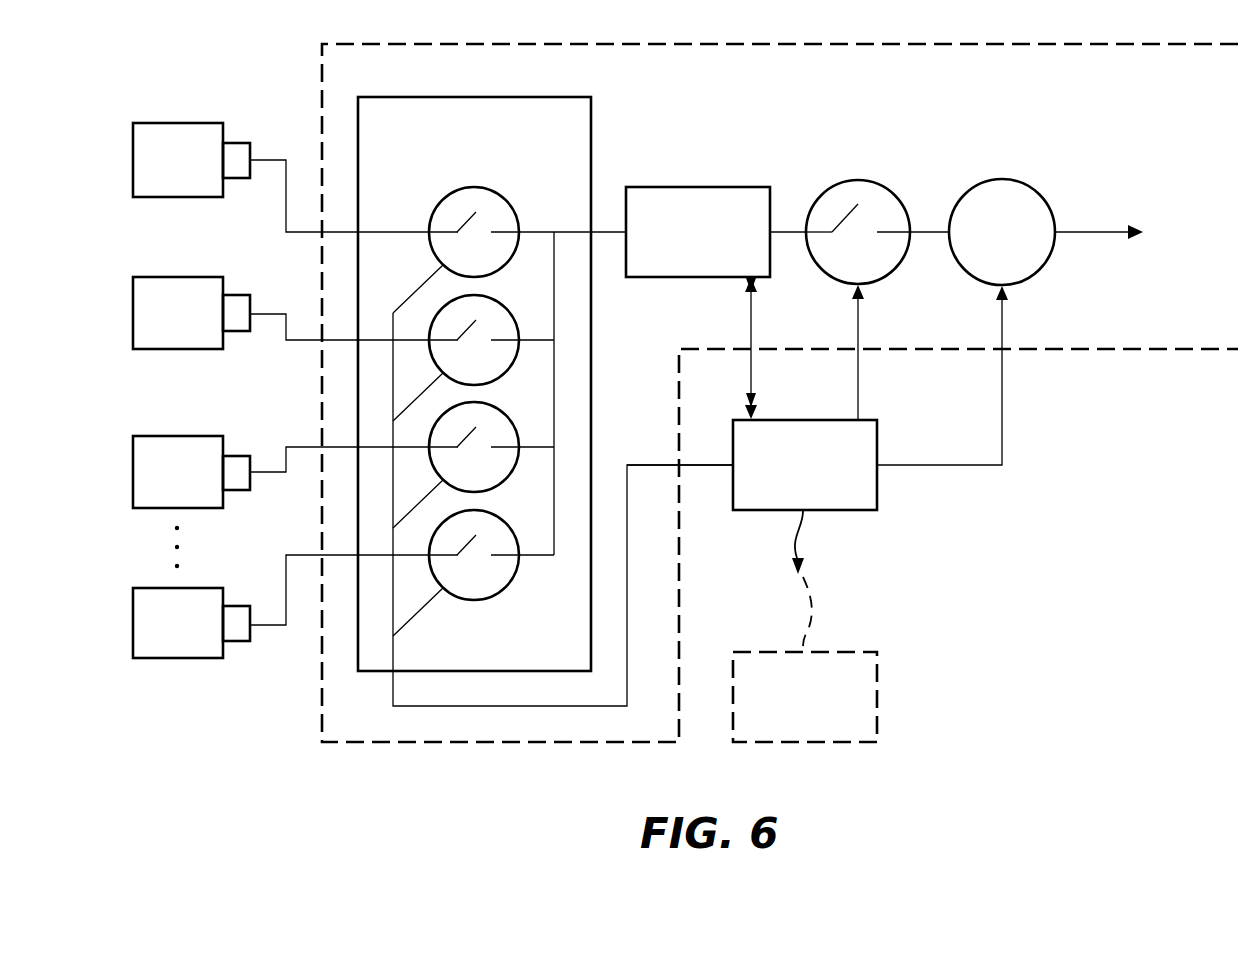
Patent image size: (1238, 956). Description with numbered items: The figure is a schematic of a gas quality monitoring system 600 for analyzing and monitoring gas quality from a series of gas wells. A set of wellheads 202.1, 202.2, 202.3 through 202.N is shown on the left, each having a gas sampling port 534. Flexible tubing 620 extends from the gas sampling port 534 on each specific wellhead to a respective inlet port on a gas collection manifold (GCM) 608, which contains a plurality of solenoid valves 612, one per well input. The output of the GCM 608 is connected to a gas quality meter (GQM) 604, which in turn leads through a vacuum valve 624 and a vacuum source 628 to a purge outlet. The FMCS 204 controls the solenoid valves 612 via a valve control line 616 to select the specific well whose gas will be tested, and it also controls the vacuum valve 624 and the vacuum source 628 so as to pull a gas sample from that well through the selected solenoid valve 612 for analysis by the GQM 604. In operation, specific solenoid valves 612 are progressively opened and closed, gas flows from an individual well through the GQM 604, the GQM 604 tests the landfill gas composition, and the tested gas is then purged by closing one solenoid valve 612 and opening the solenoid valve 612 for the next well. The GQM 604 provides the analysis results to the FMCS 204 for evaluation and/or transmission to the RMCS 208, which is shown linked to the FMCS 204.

The gas quality monitoring system 600 is at (780, 393).
The wellhead 202.1 is at (178, 160).
The wellhead 202.2 is at (178, 313).
The wellhead 202.3 is at (178, 472).
The wellhead 202.N is at (178, 623).
The gas sampling port 534 is at (237, 142).
The flexible tubing 620 is at (273, 158).
The gas collection manifold 608 is at (474, 384).
The solenoid valve 612 is at (563, 446).
The gas quality meter 604 is at (716, 303).
The vacuum valve 624 is at (877, 300).
The vacuum source 628 is at (1046, 322).
The FMCS 204 is at (805, 465).
The valve control line 616 is at (702, 466).
The RMCS 208 is at (805, 626).